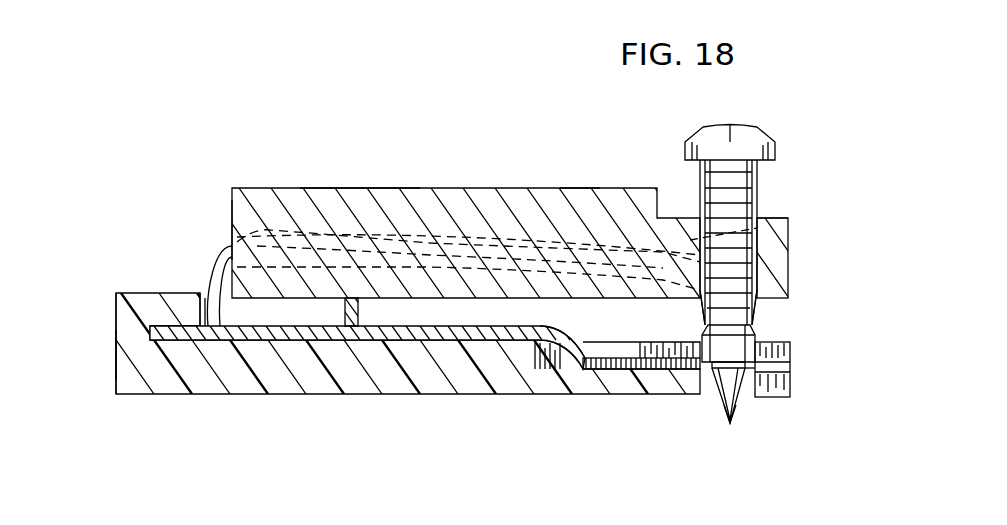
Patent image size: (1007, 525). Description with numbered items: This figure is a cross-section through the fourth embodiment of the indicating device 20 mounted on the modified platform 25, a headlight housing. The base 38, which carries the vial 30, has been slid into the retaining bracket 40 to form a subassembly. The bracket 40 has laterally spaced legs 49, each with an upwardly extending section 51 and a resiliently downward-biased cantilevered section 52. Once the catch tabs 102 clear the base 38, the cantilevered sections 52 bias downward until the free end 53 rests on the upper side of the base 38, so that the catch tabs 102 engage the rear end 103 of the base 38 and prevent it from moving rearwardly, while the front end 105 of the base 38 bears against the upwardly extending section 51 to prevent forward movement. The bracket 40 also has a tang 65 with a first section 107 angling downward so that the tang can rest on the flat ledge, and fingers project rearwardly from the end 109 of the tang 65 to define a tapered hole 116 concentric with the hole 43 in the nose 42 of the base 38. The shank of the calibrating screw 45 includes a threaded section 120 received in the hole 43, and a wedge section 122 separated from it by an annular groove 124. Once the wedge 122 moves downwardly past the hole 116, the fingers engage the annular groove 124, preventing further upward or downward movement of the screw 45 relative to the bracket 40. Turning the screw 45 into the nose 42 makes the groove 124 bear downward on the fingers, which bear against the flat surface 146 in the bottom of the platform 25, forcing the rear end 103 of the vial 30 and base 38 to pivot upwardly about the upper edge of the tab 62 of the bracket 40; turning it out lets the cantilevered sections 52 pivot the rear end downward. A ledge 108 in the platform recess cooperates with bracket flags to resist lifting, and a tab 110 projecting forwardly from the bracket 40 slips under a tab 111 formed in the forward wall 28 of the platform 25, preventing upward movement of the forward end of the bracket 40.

The indicating device 20 is at (368, 106).
The platform 25 is at (109, 391).
The forward wall 28 is at (111, 355).
The vial 30 is at (480, 190).
The base 38 is at (350, 188).
The retaining bracket 40 is at (463, 342).
The nose 42 is at (775, 218).
The hole 43 is at (755, 297).
The calibrating screw 45 is at (756, 114).
The legs 49 is at (508, 240).
The upwardly extending section 51 is at (210, 278).
The cantilevered section 52 is at (400, 243).
The free end 53 is at (810, 227).
The tab 62 is at (385, 345).
The tang 65 is at (772, 352).
The catch tab 102 is at (690, 300).
The rear end 103 is at (773, 257).
The front end 105 is at (240, 210).
The first section 107 is at (537, 334).
The ledge 108 is at (598, 275).
The end of the tang 109 is at (598, 275).
The tab 110 is at (182, 333).
The tab 111 is at (177, 307).
The hole 116 is at (750, 372).
The threaded section 120 is at (745, 185).
The wedge section 122 is at (745, 400).
The annular groove 124 is at (745, 378).
The flat surface 146 is at (730, 426).